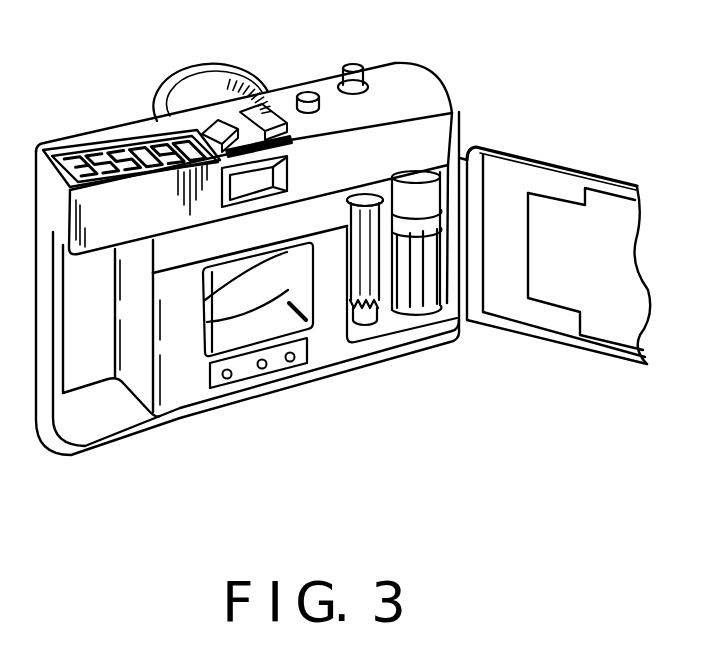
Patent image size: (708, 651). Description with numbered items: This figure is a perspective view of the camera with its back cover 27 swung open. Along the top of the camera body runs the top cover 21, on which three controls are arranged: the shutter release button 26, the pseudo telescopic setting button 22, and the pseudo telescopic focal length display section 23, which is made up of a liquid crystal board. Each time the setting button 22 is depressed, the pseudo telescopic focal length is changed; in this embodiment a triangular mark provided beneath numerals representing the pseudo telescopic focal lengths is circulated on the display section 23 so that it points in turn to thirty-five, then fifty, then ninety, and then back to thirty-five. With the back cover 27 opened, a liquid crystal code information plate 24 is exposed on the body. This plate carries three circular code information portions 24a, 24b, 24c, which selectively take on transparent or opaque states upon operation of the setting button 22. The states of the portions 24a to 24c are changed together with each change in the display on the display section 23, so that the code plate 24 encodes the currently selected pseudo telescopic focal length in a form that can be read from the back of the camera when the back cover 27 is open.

The top cover 21 is at (410, 97).
The pseudo telescopic setting button 22 is at (307, 92).
The pseudo telescopic focal length display section 23 is at (90, 142).
The liquid crystal code information plate 24 is at (296, 413).
The code information portion 24a is at (228, 380).
The code information portion 24b is at (262, 369).
The code information portion 24c is at (290, 362).
The shutter release button 26 is at (353, 64).
The back cover 27 is at (523, 180).